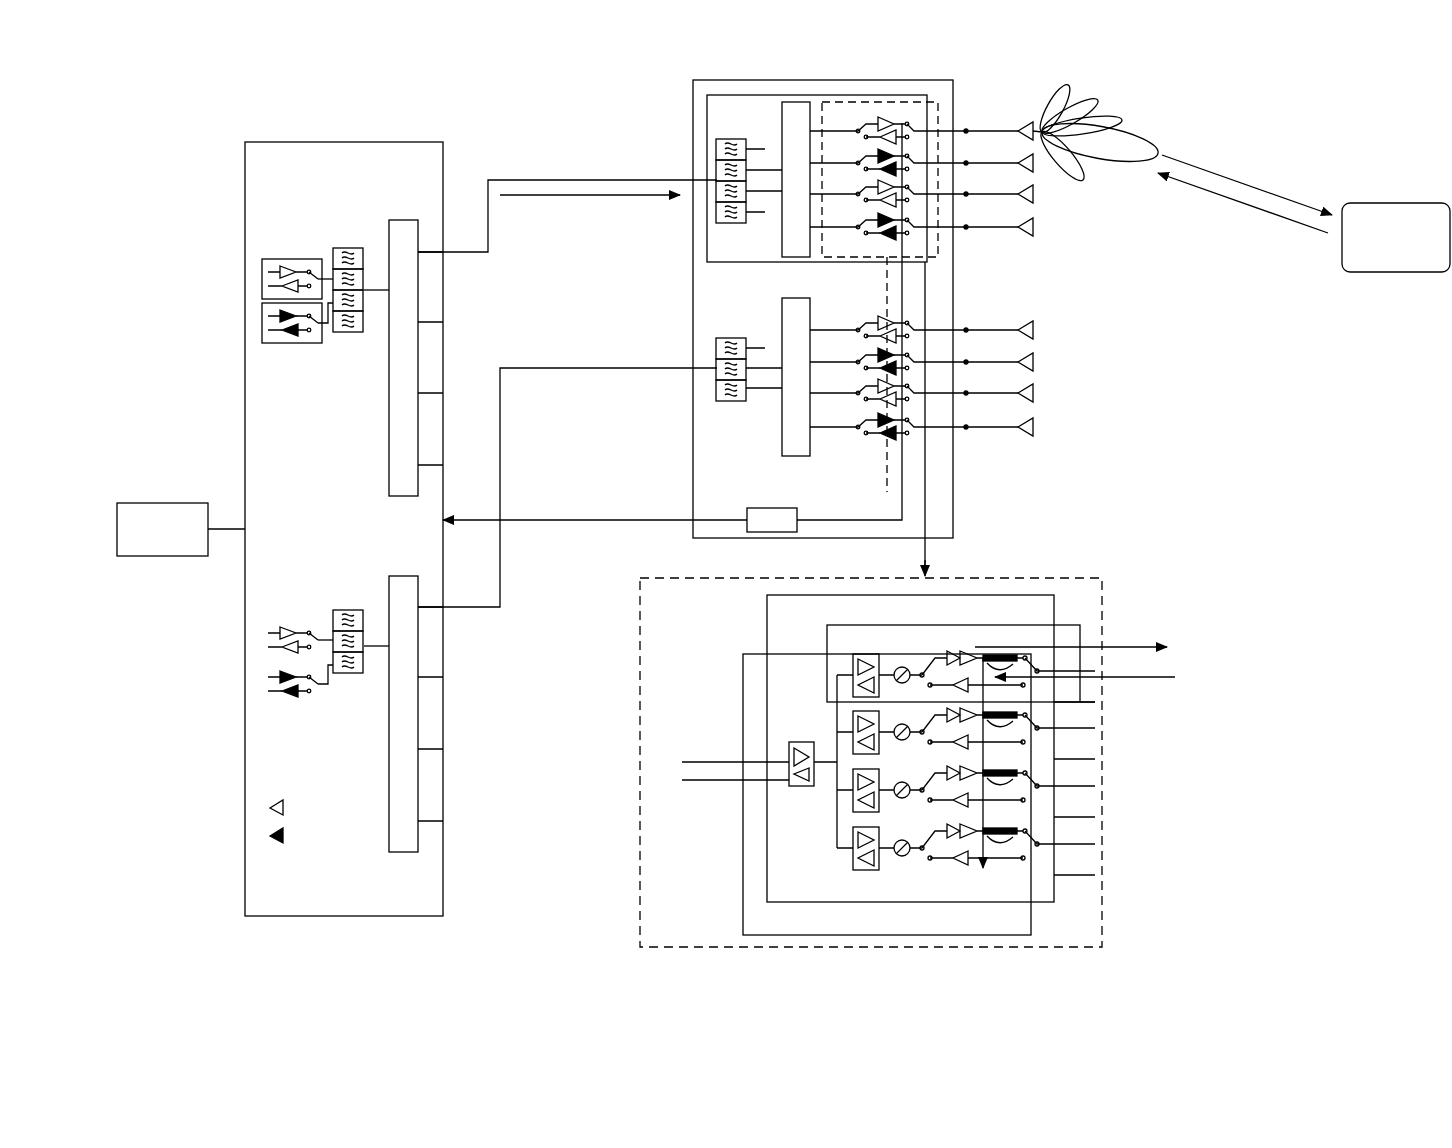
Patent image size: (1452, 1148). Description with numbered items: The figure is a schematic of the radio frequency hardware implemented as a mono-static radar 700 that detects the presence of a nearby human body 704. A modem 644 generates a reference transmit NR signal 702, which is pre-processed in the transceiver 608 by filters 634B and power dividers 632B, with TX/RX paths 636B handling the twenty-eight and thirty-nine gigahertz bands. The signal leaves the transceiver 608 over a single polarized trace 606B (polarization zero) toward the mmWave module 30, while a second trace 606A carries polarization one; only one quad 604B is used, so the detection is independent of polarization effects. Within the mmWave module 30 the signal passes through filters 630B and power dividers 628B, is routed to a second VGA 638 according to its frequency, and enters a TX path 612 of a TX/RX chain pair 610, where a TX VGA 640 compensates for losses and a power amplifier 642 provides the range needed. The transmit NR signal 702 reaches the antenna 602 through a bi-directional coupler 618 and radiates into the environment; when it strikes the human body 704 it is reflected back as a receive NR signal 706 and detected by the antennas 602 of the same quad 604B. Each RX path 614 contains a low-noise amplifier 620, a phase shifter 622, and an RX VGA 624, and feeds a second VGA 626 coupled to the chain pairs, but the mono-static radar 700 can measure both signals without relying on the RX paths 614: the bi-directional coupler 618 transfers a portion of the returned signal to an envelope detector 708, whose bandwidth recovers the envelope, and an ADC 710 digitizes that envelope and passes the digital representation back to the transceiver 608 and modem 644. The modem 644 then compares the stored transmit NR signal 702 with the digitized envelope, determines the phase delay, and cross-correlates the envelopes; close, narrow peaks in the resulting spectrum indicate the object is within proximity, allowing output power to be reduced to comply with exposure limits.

The mono-static radar 700 is at (232, 108).
The transceiver 608 is at (433, 141).
The power dividers 632B is at (405, 220).
The filters 634B is at (348, 332).
The TX/RX paths 636B is at (290, 259).
The modem 644 is at (162, 502).
The trace 606B is at (488, 178).
The trace 606A is at (512, 368).
The mmWave module 30 is at (954, 288).
The filters 630B is at (730, 140).
The power dividers 628B is at (782, 108).
The TX path 612 is at (895, 122).
The RX path 614 is at (908, 190).
The quad 604B is at (938, 110).
The ADC 710 is at (772, 507).
The antenna 602 is at (1042, 140).
The TX 5G NR signal 702 is at (1177, 152).
The RX 5G NR signal 706 is at (1318, 226).
The human body 704 is at (1378, 204).
The TX/RX chain pair 610 is at (1067, 625).
The second VGA 638 is at (788, 752).
The second VGA 626 is at (800, 787).
The TX VGA 640 is at (850, 658).
The RX VGA 624 is at (852, 862).
The phase shifter 622 is at (903, 857).
The bi-directional coupler 618 is at (1015, 720).
The envelope detector 708 is at (990, 740).
The amplifier 620 is at (968, 862).
The power amplifier 642 is at (955, 820).